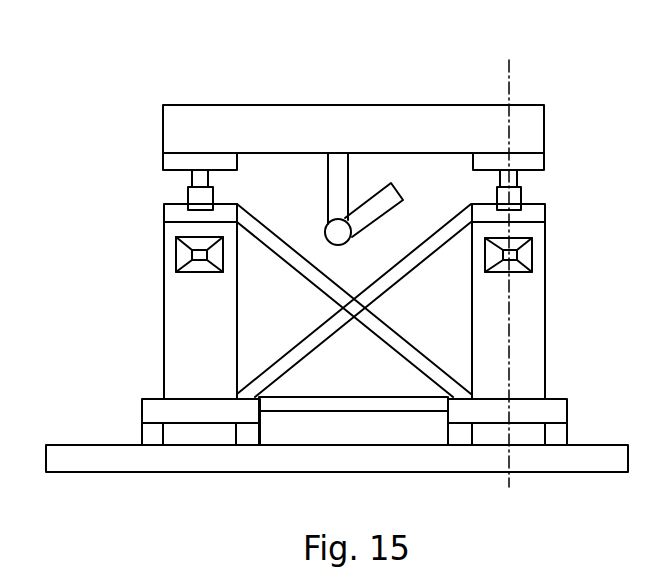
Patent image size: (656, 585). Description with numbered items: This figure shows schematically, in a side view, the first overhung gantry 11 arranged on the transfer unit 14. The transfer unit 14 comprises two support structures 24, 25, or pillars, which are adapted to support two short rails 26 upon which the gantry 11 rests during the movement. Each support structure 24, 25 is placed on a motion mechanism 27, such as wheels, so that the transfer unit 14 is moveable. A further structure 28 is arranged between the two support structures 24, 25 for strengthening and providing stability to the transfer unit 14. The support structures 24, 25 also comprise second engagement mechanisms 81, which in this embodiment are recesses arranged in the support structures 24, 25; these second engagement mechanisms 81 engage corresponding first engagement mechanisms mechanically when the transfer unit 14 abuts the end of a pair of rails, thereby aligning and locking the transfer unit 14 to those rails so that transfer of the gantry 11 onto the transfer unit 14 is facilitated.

The first overhung gantry 11 is at (395, 117).
The transfer unit 14 is at (559, 241).
The support structure 24 is at (178, 310).
The support structure 25 is at (533, 298).
The short rail 26 is at (168, 160).
The motion mechanism 27 is at (148, 437).
The further structure 28 is at (367, 402).
The second engagement mechanism 81 is at (177, 248).